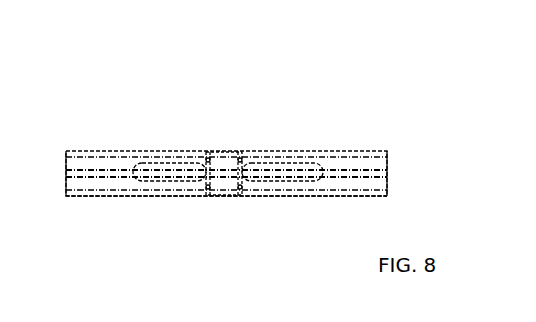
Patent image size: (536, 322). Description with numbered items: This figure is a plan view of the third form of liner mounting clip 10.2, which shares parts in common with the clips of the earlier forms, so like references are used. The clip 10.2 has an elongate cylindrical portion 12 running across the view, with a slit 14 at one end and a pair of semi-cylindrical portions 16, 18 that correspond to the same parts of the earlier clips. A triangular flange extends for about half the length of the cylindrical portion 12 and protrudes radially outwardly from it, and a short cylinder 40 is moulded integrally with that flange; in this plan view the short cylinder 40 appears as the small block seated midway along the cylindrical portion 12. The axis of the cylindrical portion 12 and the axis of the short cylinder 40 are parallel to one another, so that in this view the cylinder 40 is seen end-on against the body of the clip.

The clip 10.2 is at (344, 76).
The cylindrical portion 12 is at (121, 199).
The slit 14 is at (389, 188).
The semi-cylindrical portion 16 is at (361, 159).
The semi-cylindrical portion 18 is at (335, 198).
The short cylinder 40 is at (226, 151).